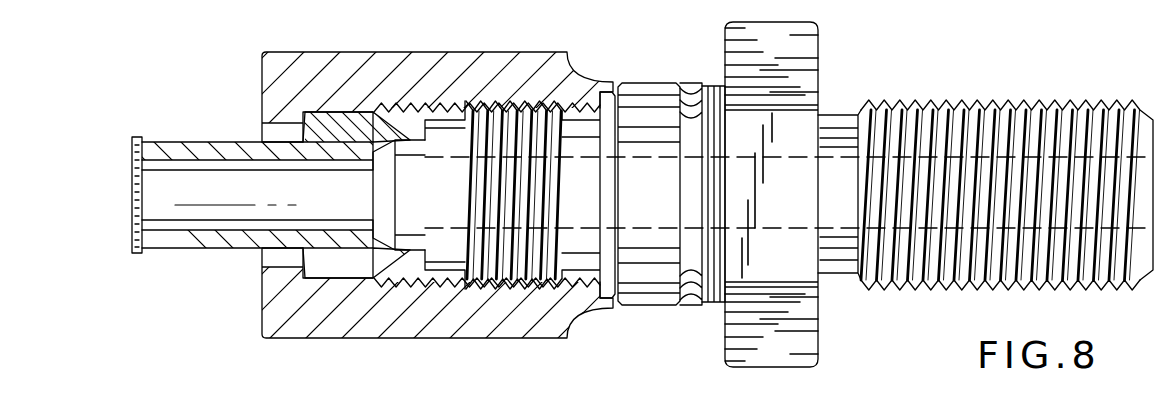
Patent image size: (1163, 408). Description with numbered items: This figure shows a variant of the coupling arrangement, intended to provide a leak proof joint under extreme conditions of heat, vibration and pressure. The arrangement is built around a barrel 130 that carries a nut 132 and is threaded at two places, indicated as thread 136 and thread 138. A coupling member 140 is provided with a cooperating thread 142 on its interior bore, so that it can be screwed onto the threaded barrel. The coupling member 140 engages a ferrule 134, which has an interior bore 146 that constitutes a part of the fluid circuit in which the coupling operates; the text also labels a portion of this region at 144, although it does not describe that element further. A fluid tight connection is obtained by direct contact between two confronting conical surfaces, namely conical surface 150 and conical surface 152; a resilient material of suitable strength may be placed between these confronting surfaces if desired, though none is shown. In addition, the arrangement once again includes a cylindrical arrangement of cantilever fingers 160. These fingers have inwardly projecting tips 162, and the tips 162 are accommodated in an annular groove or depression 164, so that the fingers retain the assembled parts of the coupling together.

The barrel 130 is at (840, 113).
The nut 132 is at (820, 44).
The ferrule 134 is at (340, 257).
The thread 136 is at (522, 232).
The thread 138 is at (893, 291).
The coupling member 140 is at (286, 322).
The cooperating thread 142 is at (396, 270).
The hose end 144 is at (182, 243).
The interior bore 146 is at (195, 196).
The conical surface 150 is at (416, 110).
The conical surface 152 is at (352, 143).
The cantilever fingers 160 is at (640, 82).
The inwardly projecting tips 162 is at (701, 85).
The annular groove or depression 164 is at (690, 193).